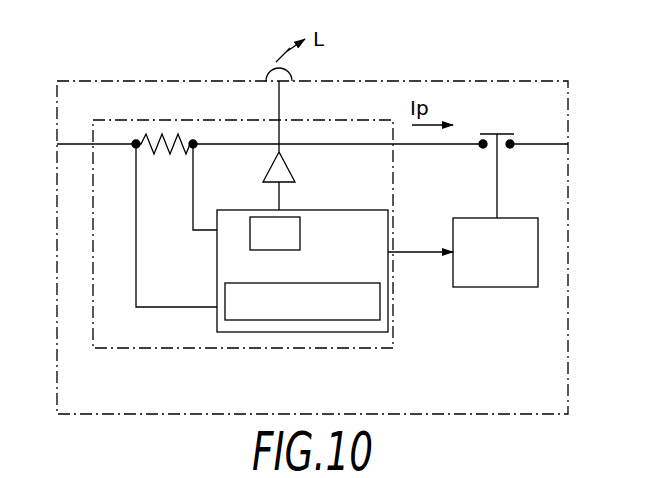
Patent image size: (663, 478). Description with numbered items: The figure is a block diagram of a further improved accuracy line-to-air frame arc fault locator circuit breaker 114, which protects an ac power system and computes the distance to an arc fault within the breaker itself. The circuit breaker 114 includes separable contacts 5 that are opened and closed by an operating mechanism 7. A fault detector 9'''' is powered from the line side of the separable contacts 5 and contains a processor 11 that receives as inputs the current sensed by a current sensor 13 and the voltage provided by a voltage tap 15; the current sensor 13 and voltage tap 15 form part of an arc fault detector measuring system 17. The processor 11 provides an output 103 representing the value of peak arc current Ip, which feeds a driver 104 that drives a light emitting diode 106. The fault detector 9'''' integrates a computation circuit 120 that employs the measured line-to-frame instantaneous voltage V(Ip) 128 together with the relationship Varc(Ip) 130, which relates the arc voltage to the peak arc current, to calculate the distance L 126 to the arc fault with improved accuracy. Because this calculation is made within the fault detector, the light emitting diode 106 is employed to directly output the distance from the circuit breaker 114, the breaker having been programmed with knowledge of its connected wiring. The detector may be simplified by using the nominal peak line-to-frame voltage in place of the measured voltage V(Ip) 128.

The circuit breaker 114 is at (92, 80).
The arc fault detector measuring system 17 is at (148, 332).
The current sensor 13 is at (158, 134).
The voltage tap 15 is at (132, 148).
The light emitting diode 106 is at (294, 73).
The driver 104 is at (290, 168).
The output 103 is at (276, 209).
The processor 11 is at (323, 209).
The distance 126 is at (250, 232).
The line-to-frame instantaneous voltage V(Ip) 128 is at (252, 296).
The computation circuit 120 is at (330, 325).
The Varc(Ip) relationship 130 is at (356, 283).
The fault detector 9'''' is at (418, 180).
The operating mechanism 7 is at (522, 218).
The separable contacts 5 is at (500, 132).